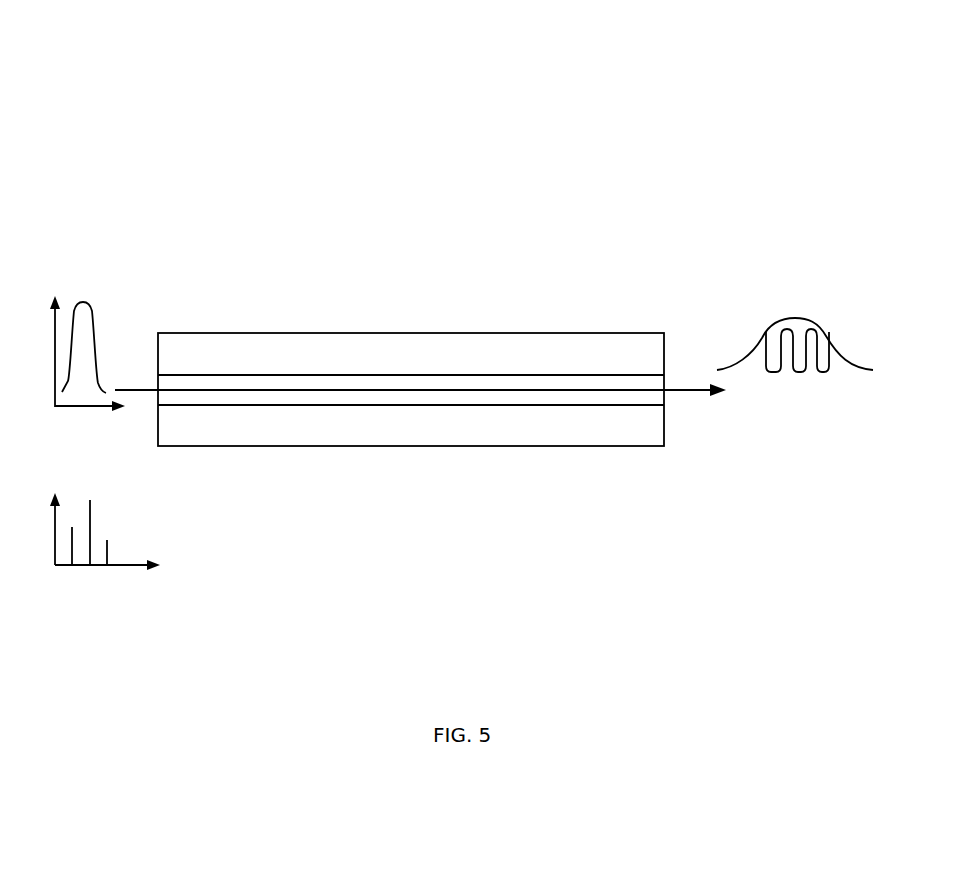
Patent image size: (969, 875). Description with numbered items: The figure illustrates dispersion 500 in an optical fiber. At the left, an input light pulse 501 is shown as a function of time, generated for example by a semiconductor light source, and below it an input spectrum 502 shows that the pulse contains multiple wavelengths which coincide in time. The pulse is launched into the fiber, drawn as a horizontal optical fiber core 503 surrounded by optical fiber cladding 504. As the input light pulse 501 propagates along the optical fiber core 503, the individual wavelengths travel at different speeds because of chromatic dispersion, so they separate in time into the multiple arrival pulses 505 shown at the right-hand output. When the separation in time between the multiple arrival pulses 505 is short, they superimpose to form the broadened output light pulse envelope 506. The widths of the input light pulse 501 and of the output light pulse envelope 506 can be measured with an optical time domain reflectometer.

The dispersion 500 is at (576, 77).
The input light pulse 501 is at (98, 357).
The input spectrum 502 is at (108, 519).
The optical fiber core 503 is at (307, 405).
The optical fiber cladding 504 is at (378, 446).
The multiple arrival pulses 505 is at (785, 371).
The output light pulse envelope 506 is at (810, 320).